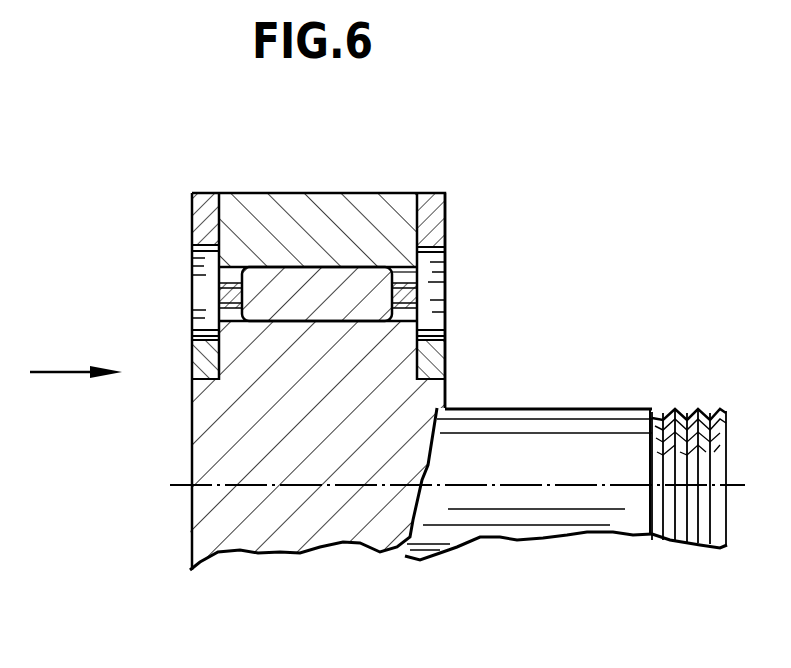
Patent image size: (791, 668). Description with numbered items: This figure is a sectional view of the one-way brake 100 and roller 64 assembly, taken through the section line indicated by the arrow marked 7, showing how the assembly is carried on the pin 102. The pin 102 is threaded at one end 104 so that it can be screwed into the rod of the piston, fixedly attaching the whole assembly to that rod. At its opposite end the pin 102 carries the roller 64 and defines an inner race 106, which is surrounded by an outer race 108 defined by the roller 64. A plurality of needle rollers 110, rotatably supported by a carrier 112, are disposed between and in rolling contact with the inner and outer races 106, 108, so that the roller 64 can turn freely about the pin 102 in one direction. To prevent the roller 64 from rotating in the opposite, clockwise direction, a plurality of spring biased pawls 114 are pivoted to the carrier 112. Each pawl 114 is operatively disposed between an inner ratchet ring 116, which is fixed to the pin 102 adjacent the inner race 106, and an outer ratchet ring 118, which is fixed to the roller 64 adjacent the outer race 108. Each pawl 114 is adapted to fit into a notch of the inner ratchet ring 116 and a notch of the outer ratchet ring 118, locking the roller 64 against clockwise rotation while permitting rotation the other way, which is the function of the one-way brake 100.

The section line for FIG. 7 is at (50, 370).
The roller 64 is at (378, 193).
The one-way brake 100 is at (466, 285).
The pin 102 is at (585, 408).
The threaded end 104 is at (683, 413).
The inner race 106 is at (326, 323).
The outer race 108 is at (283, 268).
The needle rollers 110 is at (417, 270).
The carrier 112 is at (445, 330).
The spring biased pawls 114 is at (197, 285).
The inner ratchet ring 116 is at (192, 328).
The outer ratchet ring 118 is at (197, 258).